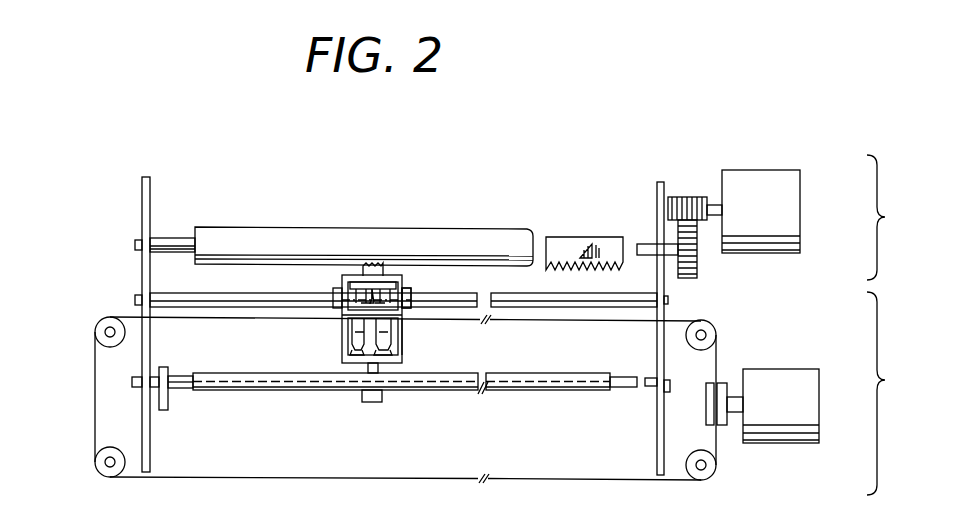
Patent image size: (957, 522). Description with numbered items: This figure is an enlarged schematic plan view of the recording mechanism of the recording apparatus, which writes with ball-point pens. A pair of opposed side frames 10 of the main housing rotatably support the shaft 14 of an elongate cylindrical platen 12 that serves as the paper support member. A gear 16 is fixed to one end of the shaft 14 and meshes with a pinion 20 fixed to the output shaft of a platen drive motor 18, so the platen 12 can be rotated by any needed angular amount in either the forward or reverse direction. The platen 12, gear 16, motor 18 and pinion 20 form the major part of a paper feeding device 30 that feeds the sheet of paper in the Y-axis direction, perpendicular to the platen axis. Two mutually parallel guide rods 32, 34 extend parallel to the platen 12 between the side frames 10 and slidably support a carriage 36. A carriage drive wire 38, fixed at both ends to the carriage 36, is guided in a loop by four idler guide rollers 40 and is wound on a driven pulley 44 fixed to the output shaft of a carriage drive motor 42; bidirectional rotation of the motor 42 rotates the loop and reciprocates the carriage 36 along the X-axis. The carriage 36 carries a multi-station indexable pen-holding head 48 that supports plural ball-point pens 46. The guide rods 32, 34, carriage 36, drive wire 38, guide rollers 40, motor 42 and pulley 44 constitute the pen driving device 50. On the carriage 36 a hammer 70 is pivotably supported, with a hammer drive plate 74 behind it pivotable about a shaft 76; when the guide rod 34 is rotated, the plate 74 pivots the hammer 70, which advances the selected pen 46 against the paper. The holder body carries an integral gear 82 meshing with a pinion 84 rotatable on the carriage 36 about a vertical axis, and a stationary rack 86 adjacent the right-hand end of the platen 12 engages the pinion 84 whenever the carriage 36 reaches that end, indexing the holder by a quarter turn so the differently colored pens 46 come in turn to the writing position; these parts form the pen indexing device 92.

The side frames 10 is at (142, 202).
The platen 12 is at (275, 236).
The shaft 14 is at (172, 245).
The gear 16 is at (697, 258).
The platen drive motor 18 is at (795, 198).
The pinion 20 is at (690, 200).
The paper feeding device 30 is at (893, 217).
The guide rod 32 is at (162, 297).
The guide rod 34 is at (160, 368).
The carriage 36 is at (342, 358).
The carriage drive wire 38 is at (243, 322).
The idler guide rollers 40 is at (97, 326).
The carriage drive motor 42 is at (805, 394).
The driven pulley 44 is at (706, 400).
The ball-point pens 46 is at (402, 348).
The pen-holding head 48 is at (398, 330).
The pen driving device 50 is at (894, 393).
The hammer 70 is at (378, 366).
The hammer drive plate 74 is at (560, 374).
The shaft 76 is at (185, 386).
The gear 82 is at (404, 300).
The pinion 84 is at (376, 285).
The stationary rack 86 is at (590, 242).
The pen indexing device 92 is at (368, 262).